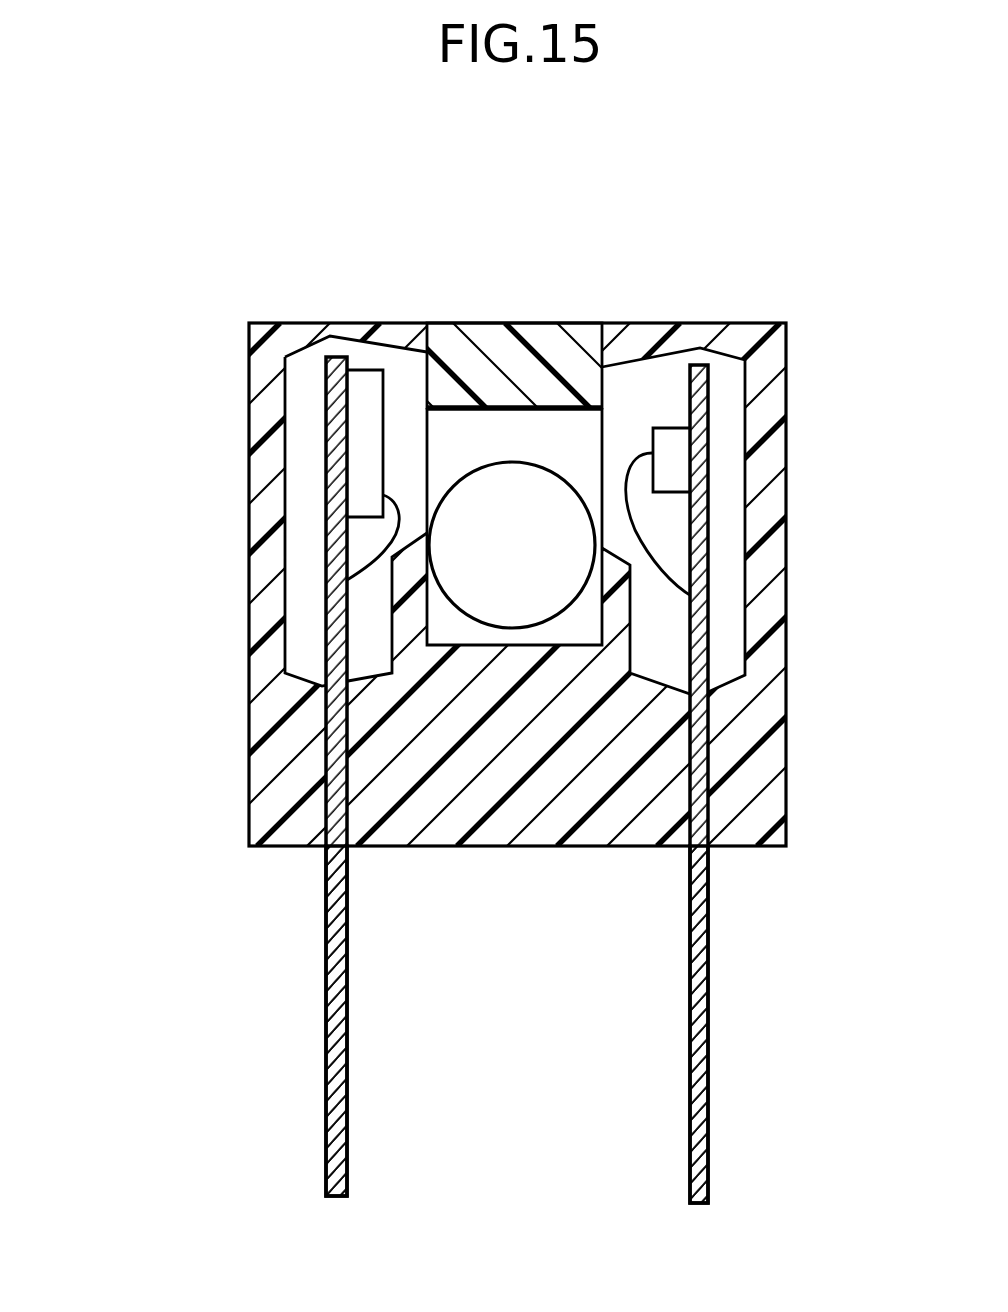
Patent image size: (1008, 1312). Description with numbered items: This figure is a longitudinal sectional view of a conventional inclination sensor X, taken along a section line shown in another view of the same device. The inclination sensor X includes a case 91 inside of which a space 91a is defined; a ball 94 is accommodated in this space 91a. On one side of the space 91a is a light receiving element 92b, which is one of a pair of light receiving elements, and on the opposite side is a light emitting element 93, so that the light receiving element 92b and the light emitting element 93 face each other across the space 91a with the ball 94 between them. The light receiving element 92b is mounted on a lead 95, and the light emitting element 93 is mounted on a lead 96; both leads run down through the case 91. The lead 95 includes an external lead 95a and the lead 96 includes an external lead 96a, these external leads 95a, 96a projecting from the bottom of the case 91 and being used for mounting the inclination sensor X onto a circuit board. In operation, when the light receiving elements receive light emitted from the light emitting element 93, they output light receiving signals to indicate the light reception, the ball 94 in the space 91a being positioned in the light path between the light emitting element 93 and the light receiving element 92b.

The inclination sensor X is at (122, 345).
The case 91 is at (288, 340).
The space 91a is at (513, 430).
The light receiving element 92b is at (372, 400).
The light emitting element 93 is at (673, 443).
The ball 94 is at (488, 490).
The lead 95 is at (330, 742).
The external lead 95a is at (327, 1085).
The lead 96 is at (710, 735).
The external lead 96a is at (708, 1077).